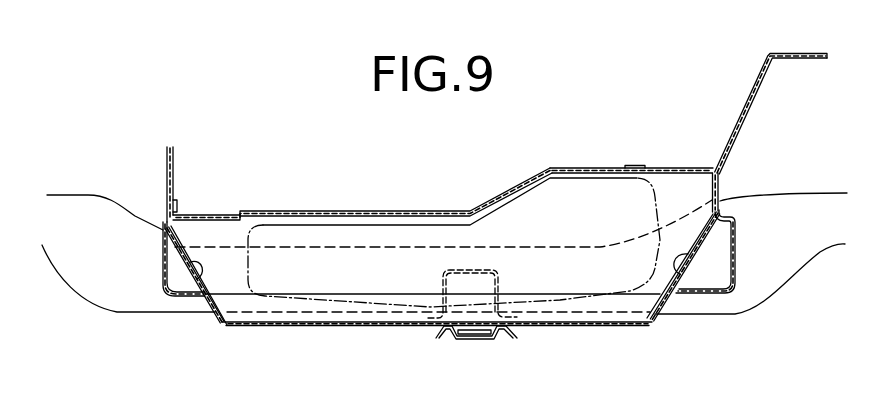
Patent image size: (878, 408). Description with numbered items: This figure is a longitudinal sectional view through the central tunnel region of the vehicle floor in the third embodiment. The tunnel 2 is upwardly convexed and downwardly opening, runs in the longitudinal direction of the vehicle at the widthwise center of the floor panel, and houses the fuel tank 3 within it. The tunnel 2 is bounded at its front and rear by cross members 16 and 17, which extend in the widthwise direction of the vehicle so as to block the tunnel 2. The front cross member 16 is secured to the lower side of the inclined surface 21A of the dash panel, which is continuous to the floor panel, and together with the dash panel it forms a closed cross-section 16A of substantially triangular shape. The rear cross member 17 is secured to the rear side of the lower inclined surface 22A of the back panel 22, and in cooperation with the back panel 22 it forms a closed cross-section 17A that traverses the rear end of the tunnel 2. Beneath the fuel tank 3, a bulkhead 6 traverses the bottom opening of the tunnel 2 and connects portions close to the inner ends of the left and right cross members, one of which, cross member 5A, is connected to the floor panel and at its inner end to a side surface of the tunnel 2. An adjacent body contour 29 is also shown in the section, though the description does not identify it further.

The tunnel 2 is at (363, 212).
The fuel tank 3 is at (593, 167).
The upper body panel 29 is at (122, 203).
The cross member 16 is at (163, 278).
The closed cross-section 16A is at (177, 259).
The inclined surface 21A is at (198, 275).
The back panel 22 is at (743, 112).
The lower inclined surface 22A is at (678, 270).
The cross member 17 is at (737, 270).
The closed cross-section 17A is at (718, 252).
The cross member 5A is at (497, 273).
The bulkhead 6 is at (470, 340).